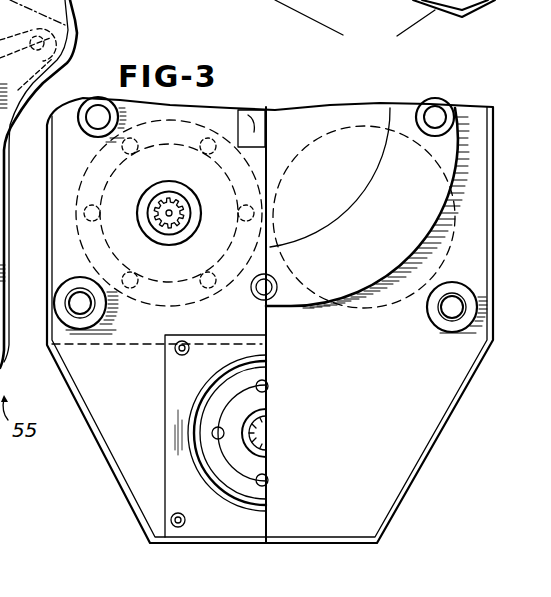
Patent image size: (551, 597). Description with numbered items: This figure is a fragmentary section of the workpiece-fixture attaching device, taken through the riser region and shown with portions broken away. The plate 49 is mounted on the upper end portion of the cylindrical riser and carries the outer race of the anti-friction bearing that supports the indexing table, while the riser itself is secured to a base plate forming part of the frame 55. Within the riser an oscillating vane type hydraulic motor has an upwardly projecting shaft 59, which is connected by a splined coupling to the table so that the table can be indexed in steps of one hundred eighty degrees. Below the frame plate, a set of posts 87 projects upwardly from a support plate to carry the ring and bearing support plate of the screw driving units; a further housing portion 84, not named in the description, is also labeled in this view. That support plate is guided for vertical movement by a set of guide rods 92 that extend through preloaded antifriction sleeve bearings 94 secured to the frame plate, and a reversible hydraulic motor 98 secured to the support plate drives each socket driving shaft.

The plate 49 is at (268, 353).
The frame 55 is at (98, 452).
The shaft 59 is at (269, 428).
The housing portion 84 is at (414, 182).
The posts 87 is at (438, 113).
The guide rods 92 is at (85, 314).
The antifriction sleeve bearings 94 is at (58, 299).
The reversible hydraulic motor 98 is at (86, 170).